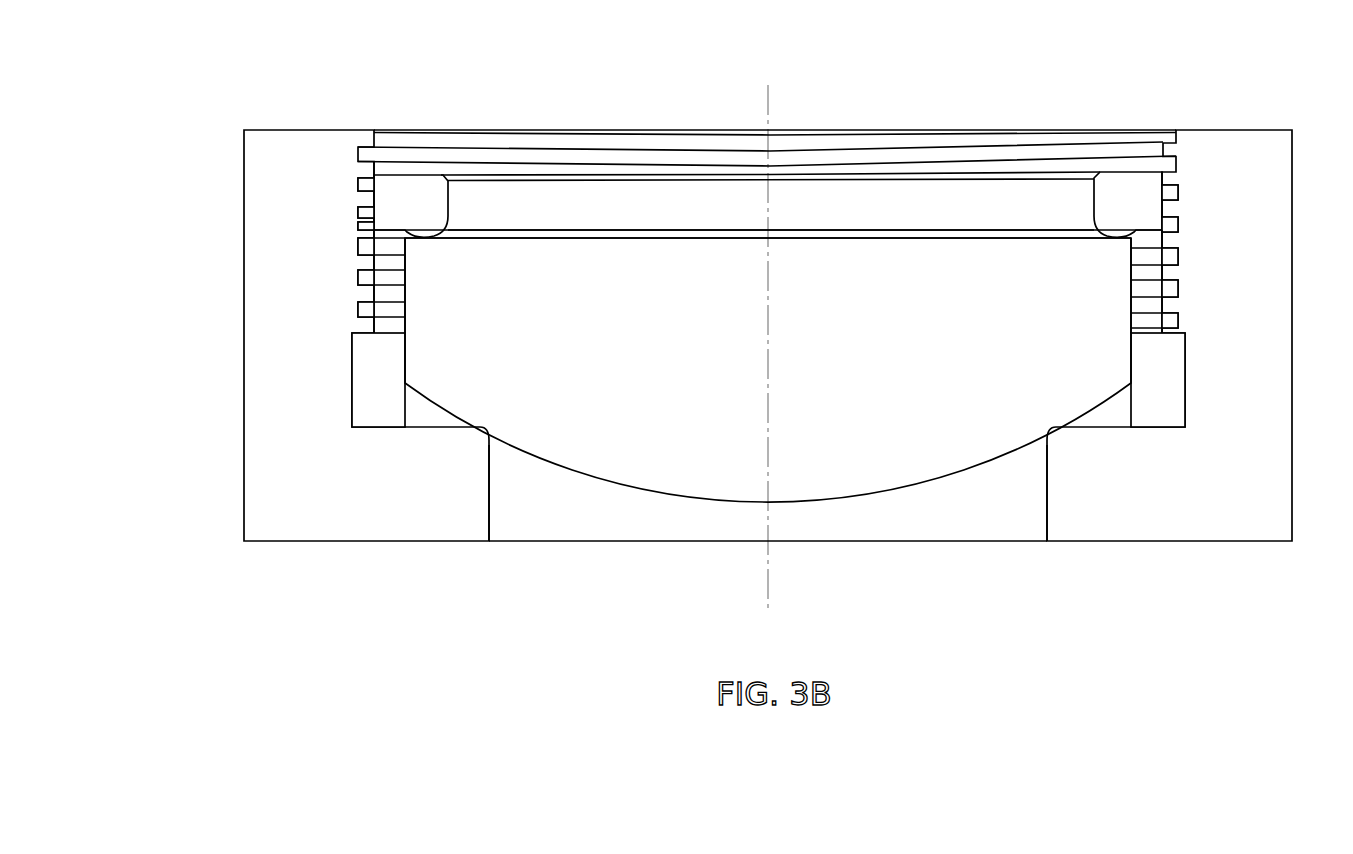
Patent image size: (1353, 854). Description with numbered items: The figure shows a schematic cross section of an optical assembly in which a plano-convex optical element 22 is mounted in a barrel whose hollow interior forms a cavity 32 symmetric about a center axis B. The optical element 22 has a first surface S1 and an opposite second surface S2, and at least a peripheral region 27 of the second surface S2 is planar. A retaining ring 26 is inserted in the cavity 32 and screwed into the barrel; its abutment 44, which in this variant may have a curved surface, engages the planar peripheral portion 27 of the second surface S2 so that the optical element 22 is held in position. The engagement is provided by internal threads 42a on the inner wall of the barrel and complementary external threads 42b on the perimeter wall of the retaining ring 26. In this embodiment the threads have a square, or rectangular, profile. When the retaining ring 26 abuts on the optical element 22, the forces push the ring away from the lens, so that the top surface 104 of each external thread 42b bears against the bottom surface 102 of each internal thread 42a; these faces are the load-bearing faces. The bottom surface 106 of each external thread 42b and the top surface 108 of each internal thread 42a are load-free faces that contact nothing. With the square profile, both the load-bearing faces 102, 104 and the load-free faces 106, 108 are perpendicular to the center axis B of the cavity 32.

The center axis B is at (770, 82).
The optical element 22 is at (955, 455).
The retaining ring 26 is at (411, 190).
The peripheral region 27 is at (425, 236).
The cavity 32 is at (607, 517).
The abutment 44 is at (455, 234).
The bottom surface of internal thread 102 is at (360, 178).
The top surface of external thread 104 is at (360, 183).
The bottom surface of external thread 106 is at (360, 212).
The top surface of internal thread 108 is at (358, 226).
The internal threads 42a is at (1170, 181).
The external threads 42b is at (1167, 196).
The first surface S1 is at (875, 497).
The second surface S2 is at (630, 239).